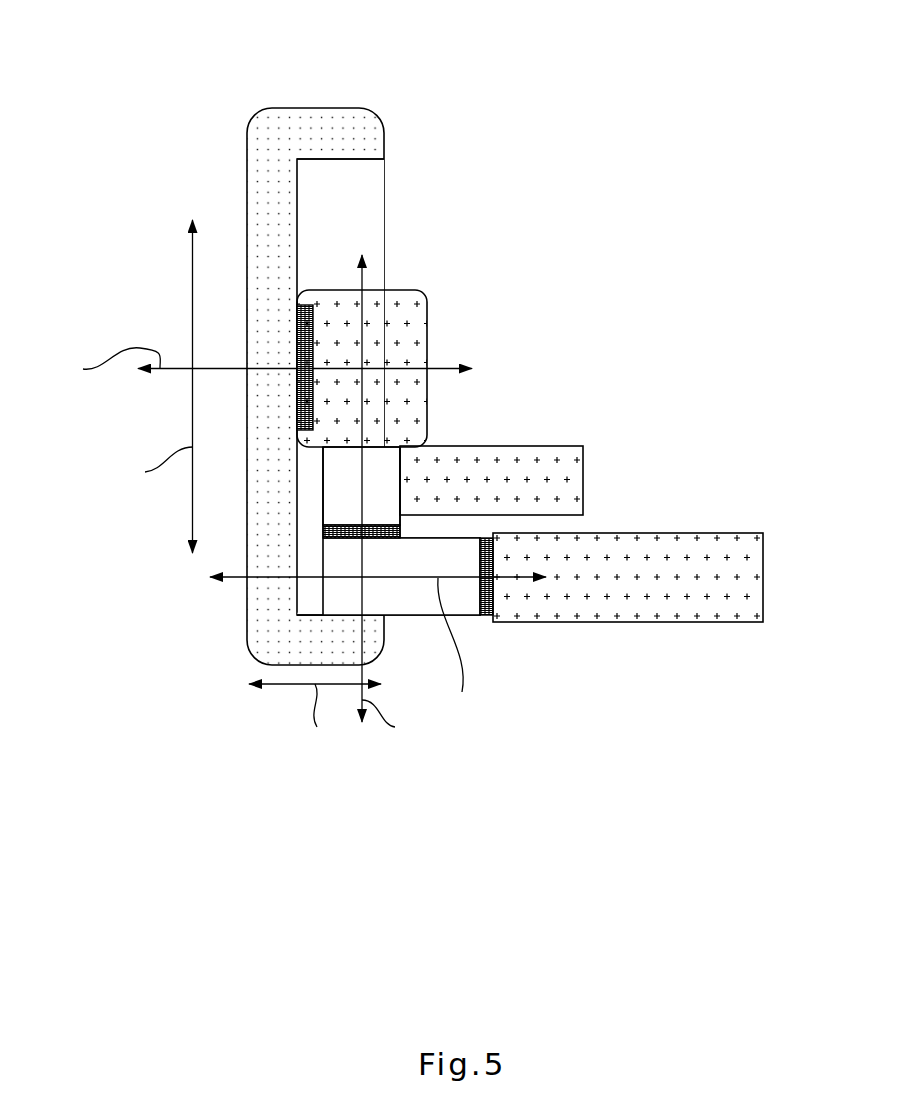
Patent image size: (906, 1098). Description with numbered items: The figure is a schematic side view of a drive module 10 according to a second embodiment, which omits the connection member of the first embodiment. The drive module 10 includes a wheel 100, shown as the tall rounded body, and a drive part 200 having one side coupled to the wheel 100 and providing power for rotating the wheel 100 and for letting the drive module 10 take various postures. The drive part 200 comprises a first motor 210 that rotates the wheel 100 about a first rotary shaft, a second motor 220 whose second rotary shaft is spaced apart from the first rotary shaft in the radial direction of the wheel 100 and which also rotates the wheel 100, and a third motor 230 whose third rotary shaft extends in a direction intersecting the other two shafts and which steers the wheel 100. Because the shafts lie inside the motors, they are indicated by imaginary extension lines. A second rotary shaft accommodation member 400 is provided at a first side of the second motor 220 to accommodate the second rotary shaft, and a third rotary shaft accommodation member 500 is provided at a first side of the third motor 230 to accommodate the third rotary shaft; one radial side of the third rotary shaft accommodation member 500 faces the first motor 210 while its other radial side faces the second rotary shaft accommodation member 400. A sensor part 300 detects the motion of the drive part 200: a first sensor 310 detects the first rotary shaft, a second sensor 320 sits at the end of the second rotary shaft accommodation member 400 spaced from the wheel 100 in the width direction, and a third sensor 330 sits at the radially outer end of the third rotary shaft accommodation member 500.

The drive module 10 is at (181, 47).
The wheel 100 is at (327, 74).
The drive part 200 is at (510, 838).
The first motor 210 is at (393, 337).
The second motor 220 is at (727, 578).
The third motor 230 is at (560, 480).
The sensor part 300 is at (700, 838).
The first sensor 310 is at (297, 332).
The second sensor 320 is at (485, 621).
The third sensor 330 is at (380, 535).
The second rotary shaft accommodation member 400 is at (455, 553).
The third rotary shaft accommodation member 500 is at (342, 493).